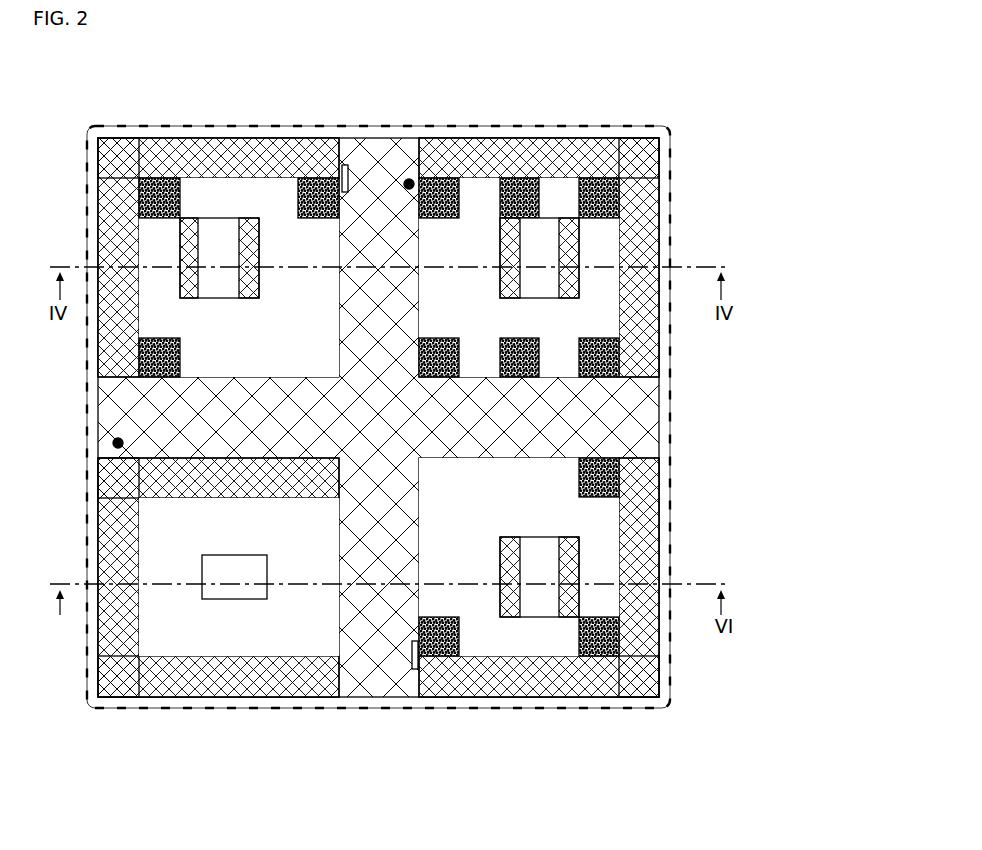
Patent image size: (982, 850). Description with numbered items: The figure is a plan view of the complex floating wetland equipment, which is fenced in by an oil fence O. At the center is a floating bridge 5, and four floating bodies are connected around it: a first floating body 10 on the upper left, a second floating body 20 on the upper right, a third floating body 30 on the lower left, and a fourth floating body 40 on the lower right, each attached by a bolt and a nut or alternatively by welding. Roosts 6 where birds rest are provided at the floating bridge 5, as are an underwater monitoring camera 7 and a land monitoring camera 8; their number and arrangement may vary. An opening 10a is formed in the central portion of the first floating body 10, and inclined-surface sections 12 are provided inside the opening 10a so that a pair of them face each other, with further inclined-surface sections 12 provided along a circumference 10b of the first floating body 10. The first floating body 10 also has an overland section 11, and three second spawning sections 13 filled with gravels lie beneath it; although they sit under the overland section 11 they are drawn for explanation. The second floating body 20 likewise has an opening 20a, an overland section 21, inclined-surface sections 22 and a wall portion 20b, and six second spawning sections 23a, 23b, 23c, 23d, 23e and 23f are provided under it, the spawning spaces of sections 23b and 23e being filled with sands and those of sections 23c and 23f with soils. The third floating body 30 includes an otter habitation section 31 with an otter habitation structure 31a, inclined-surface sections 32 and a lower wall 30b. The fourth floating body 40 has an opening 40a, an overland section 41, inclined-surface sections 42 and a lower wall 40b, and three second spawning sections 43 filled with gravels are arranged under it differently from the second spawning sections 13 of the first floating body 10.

The oil fence O is at (87, 135).
The floating bridge 5 is at (383, 400).
The roost 6 is at (345, 166).
The underwater monitoring camera 7 is at (409, 179).
The land monitoring camera 8 is at (113, 444).
The first floating body 10 is at (124, 128).
The opening 10a is at (231, 235).
The circumference 10b is at (207, 178).
The overland section 11 is at (276, 196).
The inclined-surface section 12 is at (115, 243).
The second spawning section 13 is at (160, 180).
The second floating body 20 is at (637, 128).
The opening 20a is at (543, 250).
The second upper wall gap 20b is at (481, 178).
The overland section 21 is at (577, 312).
The inclined-surface section 22 is at (573, 230).
The second spawning section 23a is at (440, 186).
The second spawning section 23b is at (518, 186).
The second spawning section 23c is at (594, 186).
The second spawning section 23d is at (453, 377).
The second spawning section 23e is at (568, 377).
The second spawning section 23f is at (615, 352).
The third floating body 30 is at (199, 705).
The third lower wall 30b is at (296, 672).
The otter habitation section 31 is at (275, 648).
The otter habitation structure 31a is at (233, 600).
The inclined-surface section 32 is at (160, 675).
The fourth floating body 40 is at (560, 705).
The opening 40a is at (543, 573).
The fourth lower wall 40b is at (527, 660).
The overland section 41 is at (588, 519).
The inclined-surface section 42 is at (638, 638).
The second spawning section 43 is at (598, 483).